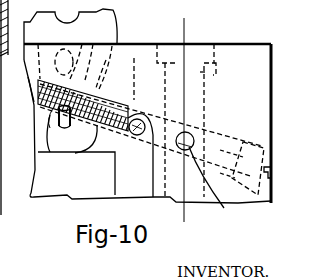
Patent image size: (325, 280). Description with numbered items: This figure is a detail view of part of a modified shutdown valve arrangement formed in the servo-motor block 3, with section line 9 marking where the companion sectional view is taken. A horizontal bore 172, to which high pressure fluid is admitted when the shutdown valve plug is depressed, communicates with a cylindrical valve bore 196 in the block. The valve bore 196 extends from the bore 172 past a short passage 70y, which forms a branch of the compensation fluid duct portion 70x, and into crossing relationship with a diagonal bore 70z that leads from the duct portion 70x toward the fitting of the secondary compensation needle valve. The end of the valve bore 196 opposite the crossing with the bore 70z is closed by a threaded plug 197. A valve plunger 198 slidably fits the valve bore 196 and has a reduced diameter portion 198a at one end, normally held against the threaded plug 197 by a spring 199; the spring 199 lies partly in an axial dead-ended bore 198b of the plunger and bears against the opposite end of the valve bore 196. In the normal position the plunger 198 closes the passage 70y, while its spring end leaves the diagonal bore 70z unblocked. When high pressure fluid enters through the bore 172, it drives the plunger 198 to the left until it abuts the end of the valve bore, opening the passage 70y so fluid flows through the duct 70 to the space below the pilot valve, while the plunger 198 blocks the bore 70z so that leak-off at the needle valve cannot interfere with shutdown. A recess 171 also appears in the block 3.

The servo-motor block 3 is at (274, 57).
The section line 9- 9 is at (197, 28).
The duct 70 is at (153, 182).
The compensation fluid duct portion 70x is at (88, 158).
The short passage 70y is at (150, 118).
The diagonal bore 70z is at (30, 203).
The hidden recess 171 is at (213, 72).
The horizontal bore 172 is at (221, 204).
The cylindrical valve bore 196 is at (205, 117).
The threaded plug 197 is at (264, 148).
The valve plunger 198 is at (119, 40).
The reduced diameter portion 198a is at (205, 132).
The axial deadended bore 198b is at (110, 60).
The spring 199 is at (33, 100).